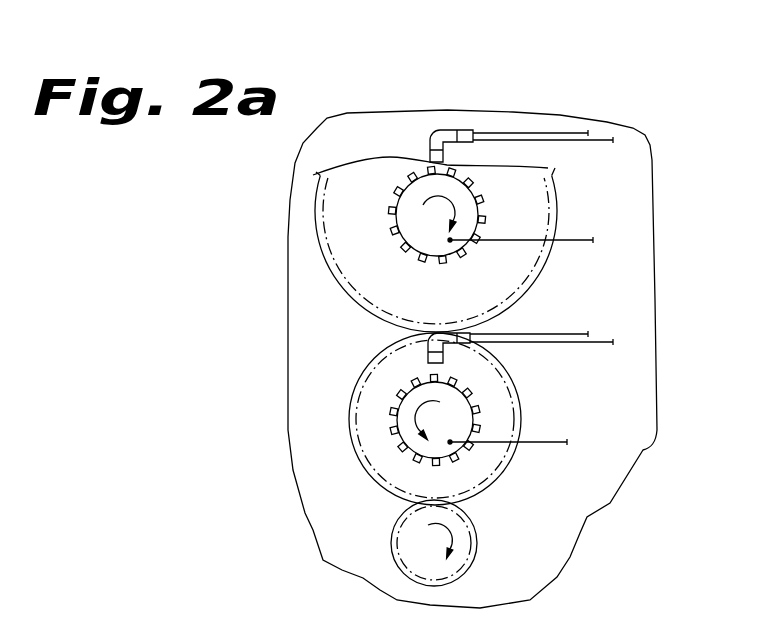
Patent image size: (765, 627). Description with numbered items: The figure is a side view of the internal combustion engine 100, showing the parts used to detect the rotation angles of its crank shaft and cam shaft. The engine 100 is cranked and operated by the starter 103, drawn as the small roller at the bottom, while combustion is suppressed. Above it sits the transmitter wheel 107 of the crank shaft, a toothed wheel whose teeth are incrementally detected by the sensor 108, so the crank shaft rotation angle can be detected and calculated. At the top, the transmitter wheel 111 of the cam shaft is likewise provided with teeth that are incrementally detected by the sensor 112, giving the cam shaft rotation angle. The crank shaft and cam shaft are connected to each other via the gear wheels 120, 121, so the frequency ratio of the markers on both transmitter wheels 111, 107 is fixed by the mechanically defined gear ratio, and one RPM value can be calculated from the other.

The internal combustion engine 100 is at (637, 207).
The sensor 112 is at (457, 135).
The transmitter wheel 111 is at (413, 233).
The gear wheel 120 is at (518, 273).
The sensor 108 is at (457, 332).
The gear wheel 121 is at (503, 413).
The transmitter wheel 107 is at (410, 433).
The starter 103 is at (460, 534).